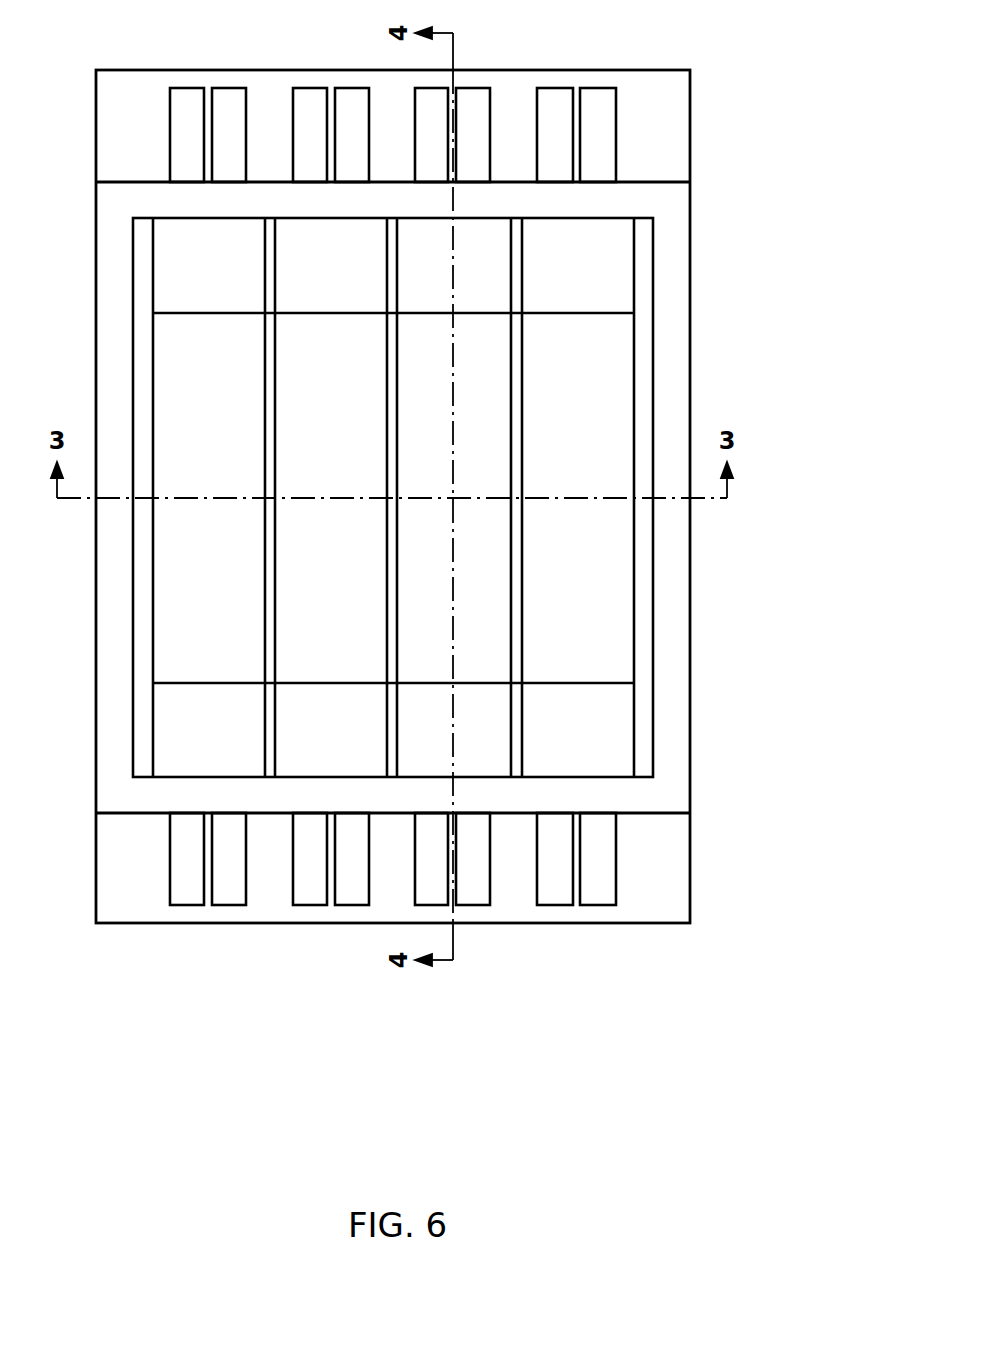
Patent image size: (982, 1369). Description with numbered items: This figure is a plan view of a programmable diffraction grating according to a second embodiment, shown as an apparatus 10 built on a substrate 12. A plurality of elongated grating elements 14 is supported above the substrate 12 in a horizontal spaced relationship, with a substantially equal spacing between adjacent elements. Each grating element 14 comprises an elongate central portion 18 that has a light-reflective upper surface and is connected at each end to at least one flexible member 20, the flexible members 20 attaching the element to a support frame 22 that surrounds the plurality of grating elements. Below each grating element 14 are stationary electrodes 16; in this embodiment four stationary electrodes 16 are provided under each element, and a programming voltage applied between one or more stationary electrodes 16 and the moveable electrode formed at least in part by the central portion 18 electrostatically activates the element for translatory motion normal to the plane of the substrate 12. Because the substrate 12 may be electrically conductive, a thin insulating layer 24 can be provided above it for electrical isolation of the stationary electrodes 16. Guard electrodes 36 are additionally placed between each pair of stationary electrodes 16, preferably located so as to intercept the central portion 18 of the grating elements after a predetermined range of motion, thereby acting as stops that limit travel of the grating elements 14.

The apparatus 10 is at (662, 961).
The substrate 12 is at (690, 870).
The grating element 14 is at (636, 383).
The stationary electrode 16 is at (600, 105).
The central portion 18 is at (578, 498).
The flexible member 20 is at (393, 496).
The support frame 22 is at (670, 202).
The insulating layer 24 is at (653, 868).
The guard electrode 36 is at (514, 442).